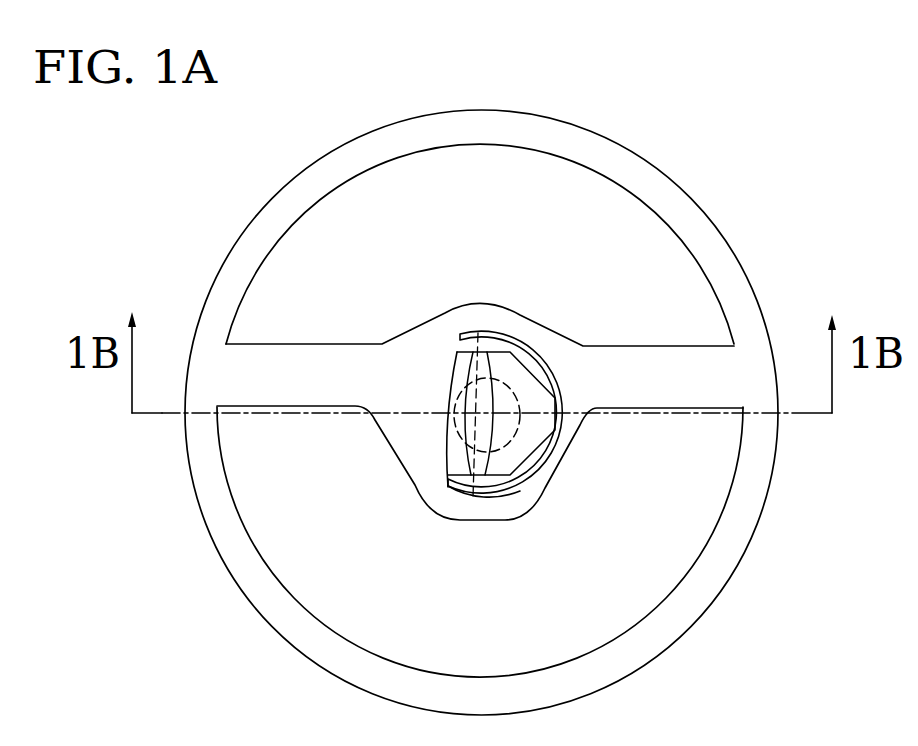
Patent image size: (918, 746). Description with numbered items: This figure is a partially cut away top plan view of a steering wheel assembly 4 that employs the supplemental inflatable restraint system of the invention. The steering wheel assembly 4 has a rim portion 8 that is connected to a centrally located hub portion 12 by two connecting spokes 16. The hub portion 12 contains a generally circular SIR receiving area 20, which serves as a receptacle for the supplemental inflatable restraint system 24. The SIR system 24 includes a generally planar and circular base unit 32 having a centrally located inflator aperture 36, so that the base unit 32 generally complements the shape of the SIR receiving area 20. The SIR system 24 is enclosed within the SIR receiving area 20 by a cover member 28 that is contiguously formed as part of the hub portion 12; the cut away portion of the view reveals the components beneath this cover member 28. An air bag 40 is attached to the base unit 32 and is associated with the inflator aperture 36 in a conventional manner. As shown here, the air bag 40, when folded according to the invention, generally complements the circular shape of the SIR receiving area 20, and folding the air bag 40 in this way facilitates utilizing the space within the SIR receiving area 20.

The steering wheel assembly 4 is at (743, 160).
The rim portion 8 is at (677, 618).
The hub portion 12 is at (446, 313).
The connecting spokes 16 is at (288, 388).
The SIR receiving area 20 is at (503, 488).
The supplemental inflatable restraint system 24 is at (543, 345).
The cover member 28 is at (440, 387).
The base unit 32 is at (477, 487).
The inflator aperture 36 is at (518, 417).
The air bag 40 is at (533, 390).